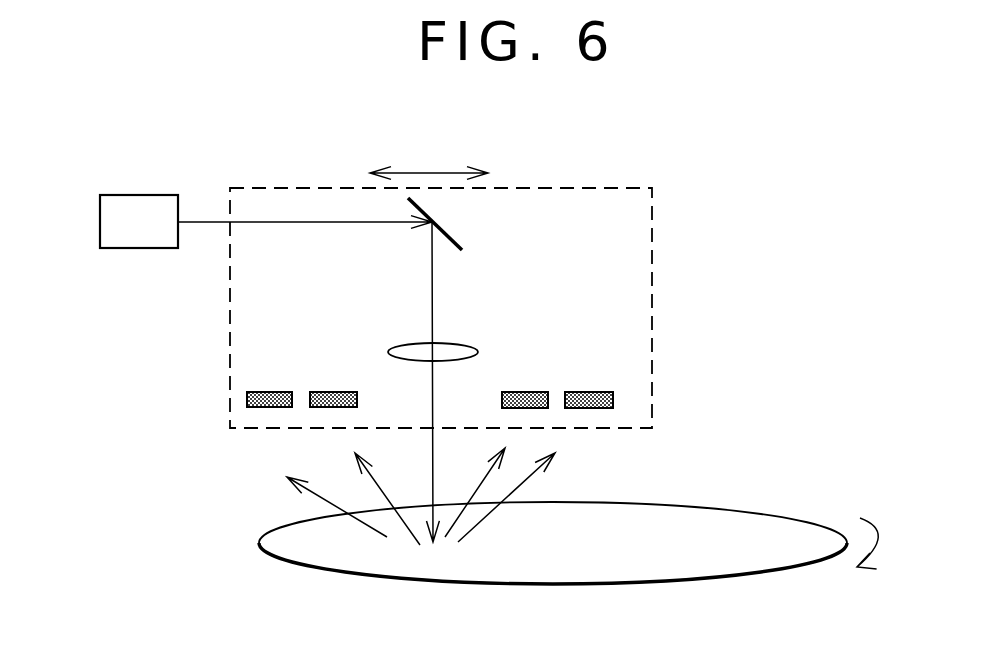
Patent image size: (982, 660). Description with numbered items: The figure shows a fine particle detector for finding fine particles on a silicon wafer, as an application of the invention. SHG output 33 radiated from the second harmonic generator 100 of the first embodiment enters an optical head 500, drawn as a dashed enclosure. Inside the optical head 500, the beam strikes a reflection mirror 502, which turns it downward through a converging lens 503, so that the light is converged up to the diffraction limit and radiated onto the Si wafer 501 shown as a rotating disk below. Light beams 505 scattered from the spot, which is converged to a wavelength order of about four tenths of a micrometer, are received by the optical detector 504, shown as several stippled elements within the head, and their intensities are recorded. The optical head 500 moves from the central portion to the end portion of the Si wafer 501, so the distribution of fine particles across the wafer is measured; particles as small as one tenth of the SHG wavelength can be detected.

The second harmonic generator 100 is at (139, 242).
The SHG output 33 is at (308, 379).
The optical head 500 is at (441, 286).
The reflection mirror 502 is at (461, 224).
The converging lens 503 is at (444, 329).
The optical detector 504 is at (430, 379).
The light beams 505 is at (459, 496).
The Si wafer 501 is at (568, 563).